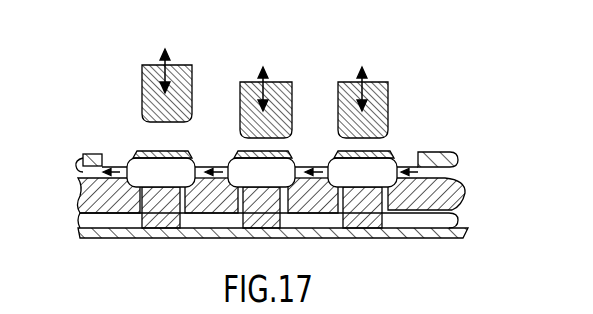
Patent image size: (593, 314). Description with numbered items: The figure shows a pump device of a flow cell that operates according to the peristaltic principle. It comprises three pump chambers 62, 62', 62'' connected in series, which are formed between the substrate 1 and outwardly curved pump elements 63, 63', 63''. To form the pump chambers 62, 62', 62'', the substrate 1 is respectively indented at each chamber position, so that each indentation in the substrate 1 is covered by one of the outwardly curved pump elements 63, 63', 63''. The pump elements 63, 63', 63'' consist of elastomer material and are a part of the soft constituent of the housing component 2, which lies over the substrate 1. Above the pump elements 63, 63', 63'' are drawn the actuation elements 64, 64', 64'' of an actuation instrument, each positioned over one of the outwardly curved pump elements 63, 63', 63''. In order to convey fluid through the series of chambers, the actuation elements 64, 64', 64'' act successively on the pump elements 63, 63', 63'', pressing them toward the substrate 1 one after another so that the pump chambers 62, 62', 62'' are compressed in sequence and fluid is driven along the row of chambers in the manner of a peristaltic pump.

The substrate 1 is at (80, 205).
The housing component 2 is at (455, 160).
The pump chamber 62 is at (131, 146).
The pump chamber 62' is at (241, 148).
The pump chamber 62'' is at (347, 150).
The pump element 63 is at (140, 109).
The pump element 63' is at (249, 106).
The pump element 63'' is at (401, 126).
The actuation element 64 is at (187, 72).
The actuation element 64' is at (288, 78).
The actuation element 64'' is at (386, 86).